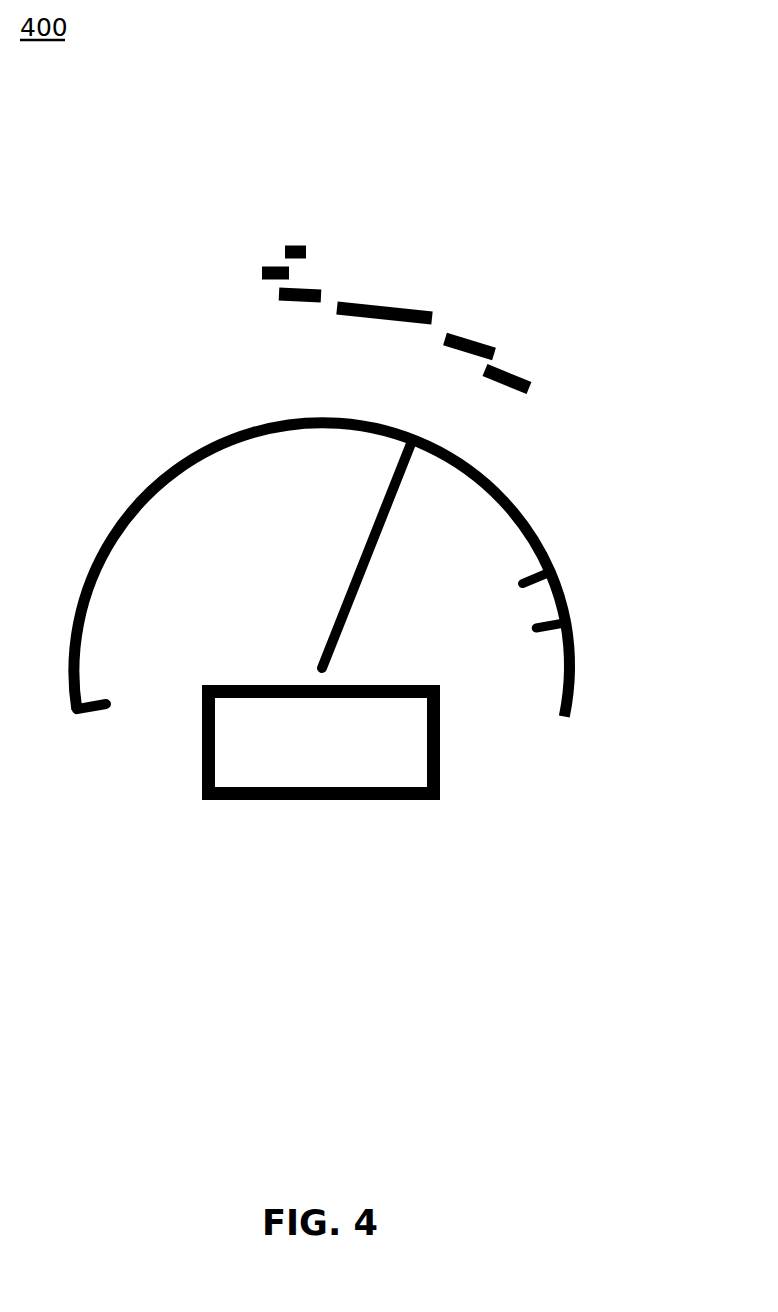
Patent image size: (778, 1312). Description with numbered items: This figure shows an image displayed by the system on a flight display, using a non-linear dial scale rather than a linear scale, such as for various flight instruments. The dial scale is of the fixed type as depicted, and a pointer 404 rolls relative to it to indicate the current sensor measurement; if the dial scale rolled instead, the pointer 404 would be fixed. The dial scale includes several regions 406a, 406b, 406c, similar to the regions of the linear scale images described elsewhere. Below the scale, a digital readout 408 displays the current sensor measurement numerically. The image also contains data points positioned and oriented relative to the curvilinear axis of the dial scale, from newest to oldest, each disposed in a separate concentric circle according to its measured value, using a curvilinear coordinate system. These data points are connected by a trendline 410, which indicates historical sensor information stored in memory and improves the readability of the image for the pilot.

The pointer 404 is at (378, 535).
The region 406a is at (498, 488).
The region 406b is at (570, 608).
The region 406c is at (575, 680).
The digital readout 408 is at (353, 800).
The trendline 410 is at (517, 372).